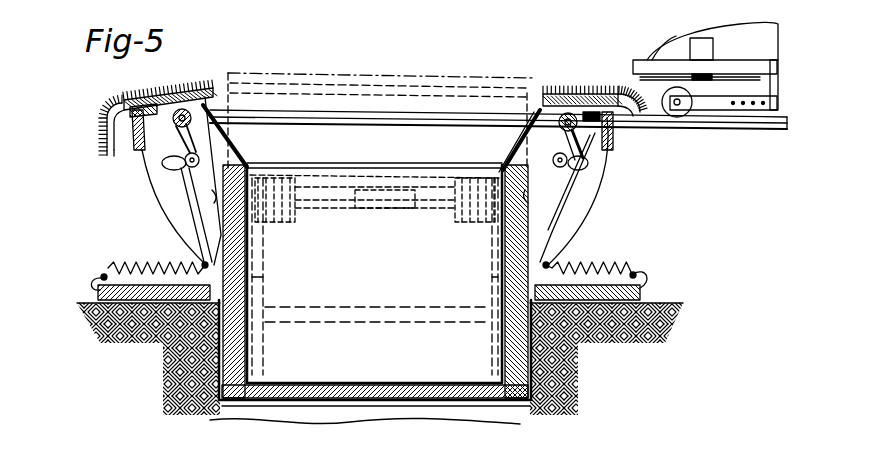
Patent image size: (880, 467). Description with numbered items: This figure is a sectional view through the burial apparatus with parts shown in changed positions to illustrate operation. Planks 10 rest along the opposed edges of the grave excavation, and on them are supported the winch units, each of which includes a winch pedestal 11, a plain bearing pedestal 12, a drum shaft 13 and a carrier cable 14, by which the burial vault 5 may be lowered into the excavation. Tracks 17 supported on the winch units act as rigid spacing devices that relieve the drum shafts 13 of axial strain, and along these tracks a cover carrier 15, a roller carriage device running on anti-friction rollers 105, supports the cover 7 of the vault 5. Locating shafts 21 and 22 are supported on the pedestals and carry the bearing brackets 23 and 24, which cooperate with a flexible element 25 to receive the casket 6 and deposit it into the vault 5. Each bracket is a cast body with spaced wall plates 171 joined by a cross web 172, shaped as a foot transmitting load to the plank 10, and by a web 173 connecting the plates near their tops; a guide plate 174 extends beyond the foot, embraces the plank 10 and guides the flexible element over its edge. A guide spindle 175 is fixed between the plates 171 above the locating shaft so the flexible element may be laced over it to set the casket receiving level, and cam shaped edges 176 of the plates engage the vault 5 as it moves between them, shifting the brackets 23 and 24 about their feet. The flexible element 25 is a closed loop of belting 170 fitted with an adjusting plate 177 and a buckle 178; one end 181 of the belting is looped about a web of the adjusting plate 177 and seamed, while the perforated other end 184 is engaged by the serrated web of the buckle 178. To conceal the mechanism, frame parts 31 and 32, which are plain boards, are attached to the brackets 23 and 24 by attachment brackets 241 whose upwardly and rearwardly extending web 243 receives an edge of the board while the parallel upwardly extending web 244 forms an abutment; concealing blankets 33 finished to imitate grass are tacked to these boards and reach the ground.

The burial vault 5 is at (370, 294).
The casket 6 is at (263, 250).
The cover 7 is at (745, 28).
The planks 10 is at (97, 292).
The winch pedestal 11 is at (616, 262).
The plain bearing pedestal 12 is at (164, 230).
The drum shaft 13 is at (368, 212).
The carrier cables 14 is at (265, 293).
The cover carrier 15 is at (752, 66).
The tracks 17 is at (333, 123).
The locating shaft 21 is at (195, 168).
The locating shaft 22 is at (556, 166).
The bearing bracket 23 is at (160, 197).
The bearing bracket 24 is at (606, 185).
The flexible element 25 is at (243, 157).
The frame part 31 is at (165, 90).
The frame part 32 is at (586, 88).
The concealing blankets 33 is at (102, 155).
The anti-friction rollers 105 is at (686, 98).
The belting 170 is at (518, 150).
The wall plates 171 is at (167, 210).
The cross web 172 is at (198, 281).
The web 173 is at (138, 150).
The guide plate 174 is at (252, 277).
The guide spindle 175 is at (183, 128).
The edges 176 is at (376, 193).
The adjusting plate 177 is at (560, 204).
The buckle 178 is at (525, 138).
The end 181 is at (572, 178).
The end 184 is at (530, 125).
The attachment brackets 241 is at (228, 105).
The web 243 is at (210, 86).
The web 244 is at (105, 135).